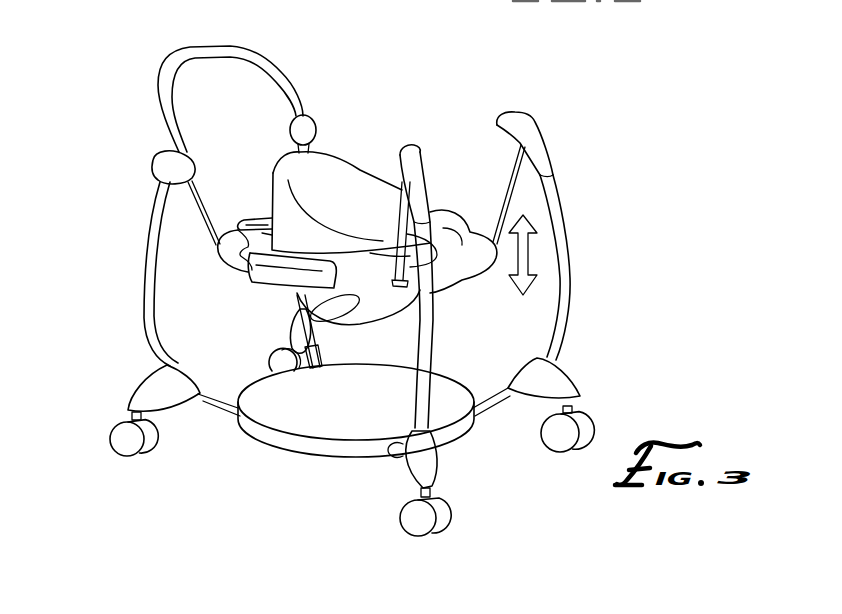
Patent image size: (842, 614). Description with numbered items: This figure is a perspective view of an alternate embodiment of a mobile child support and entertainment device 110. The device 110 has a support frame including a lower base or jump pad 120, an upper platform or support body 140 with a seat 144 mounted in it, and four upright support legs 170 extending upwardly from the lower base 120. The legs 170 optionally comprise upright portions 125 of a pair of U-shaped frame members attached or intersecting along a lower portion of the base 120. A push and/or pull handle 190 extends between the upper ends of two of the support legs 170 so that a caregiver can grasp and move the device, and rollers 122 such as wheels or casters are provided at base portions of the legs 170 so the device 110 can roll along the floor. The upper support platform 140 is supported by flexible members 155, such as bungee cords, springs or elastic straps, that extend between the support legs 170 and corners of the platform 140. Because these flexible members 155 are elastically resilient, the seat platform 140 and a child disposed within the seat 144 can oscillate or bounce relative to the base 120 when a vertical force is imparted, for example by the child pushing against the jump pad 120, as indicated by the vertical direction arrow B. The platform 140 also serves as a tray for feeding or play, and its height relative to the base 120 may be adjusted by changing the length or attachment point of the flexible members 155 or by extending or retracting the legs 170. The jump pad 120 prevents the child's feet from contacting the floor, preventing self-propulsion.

The mobile child support and entertainment device 110 is at (98, 114).
The push and/or pull handle 190 is at (195, 53).
The flexible members 155 is at (207, 210).
The upright support legs 170 is at (143, 262).
The seat 144 is at (343, 185).
The upper platform or support body 140 is at (468, 270).
The lower base or jump pad 120 is at (332, 417).
The upright portions 125 is at (148, 390).
The rollers 122 is at (125, 447).
The vertical adjustment direction B is at (531, 258).